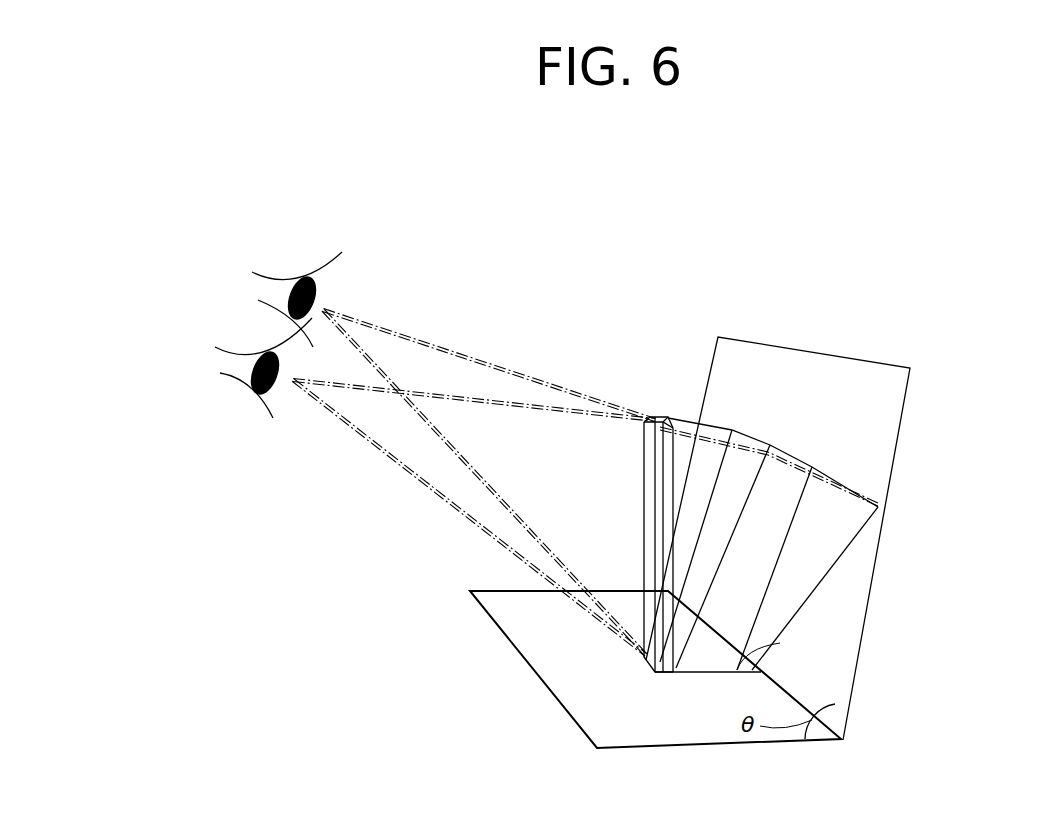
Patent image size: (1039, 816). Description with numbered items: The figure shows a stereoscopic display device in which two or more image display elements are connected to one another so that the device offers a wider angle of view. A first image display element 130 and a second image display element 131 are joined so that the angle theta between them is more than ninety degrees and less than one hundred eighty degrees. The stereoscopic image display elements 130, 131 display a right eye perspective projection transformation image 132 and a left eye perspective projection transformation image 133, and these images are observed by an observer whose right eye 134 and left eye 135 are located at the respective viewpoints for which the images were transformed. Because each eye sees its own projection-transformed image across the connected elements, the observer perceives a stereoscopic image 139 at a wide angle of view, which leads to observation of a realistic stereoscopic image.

The image display element 130 is at (490, 617).
The image display element 131 is at (905, 400).
The right eye perspective projection transformation image 132 is at (718, 483).
The left eye perspective projection transformation image 133 is at (848, 552).
The right eye 134 is at (218, 363).
The left eye 135 is at (258, 288).
The stereoscopic image 139 is at (645, 470).